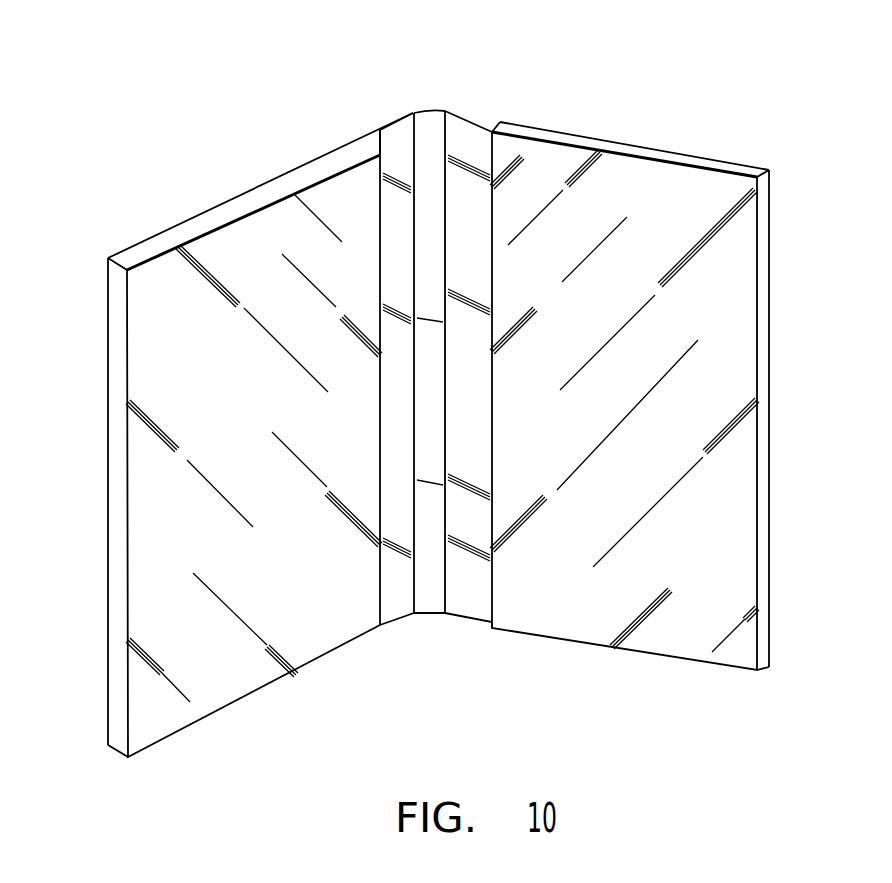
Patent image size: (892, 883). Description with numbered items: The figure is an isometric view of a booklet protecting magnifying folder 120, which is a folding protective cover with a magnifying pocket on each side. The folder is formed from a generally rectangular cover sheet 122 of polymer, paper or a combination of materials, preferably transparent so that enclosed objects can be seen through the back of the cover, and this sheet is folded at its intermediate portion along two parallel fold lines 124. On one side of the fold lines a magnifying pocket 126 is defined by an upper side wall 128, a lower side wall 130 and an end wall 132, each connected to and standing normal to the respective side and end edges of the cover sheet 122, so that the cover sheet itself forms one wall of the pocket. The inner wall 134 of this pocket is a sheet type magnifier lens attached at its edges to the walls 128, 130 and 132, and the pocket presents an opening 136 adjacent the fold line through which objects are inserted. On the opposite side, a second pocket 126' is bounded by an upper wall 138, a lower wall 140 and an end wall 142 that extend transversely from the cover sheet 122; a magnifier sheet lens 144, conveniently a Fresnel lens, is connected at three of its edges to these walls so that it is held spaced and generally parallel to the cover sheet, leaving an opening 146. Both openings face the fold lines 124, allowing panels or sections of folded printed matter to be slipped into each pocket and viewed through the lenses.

The booklet protecting magnifying folder 120 is at (703, 95).
The cover sheet 122 is at (393, 145).
The fold lines 124 is at (445, 155).
The magnifying pocket 126 is at (218, 469).
The magnifying pocket 126' is at (673, 394).
The upper side wall 128 is at (223, 215).
The lower side wall 130 is at (115, 753).
The end wall 132 is at (113, 333).
The inner wall 134 is at (255, 672).
The opening 136 is at (388, 607).
The upper wall 138 is at (548, 138).
The lower wall 140 is at (764, 670).
The end wall 142 is at (765, 382).
The magnifier sheet lens 144 is at (562, 620).
The opening 146 is at (493, 587).